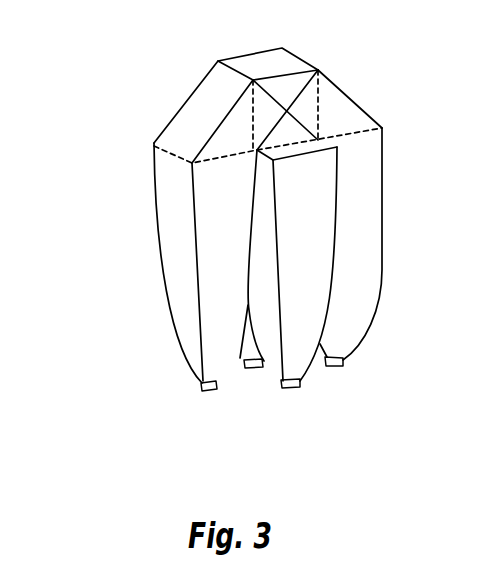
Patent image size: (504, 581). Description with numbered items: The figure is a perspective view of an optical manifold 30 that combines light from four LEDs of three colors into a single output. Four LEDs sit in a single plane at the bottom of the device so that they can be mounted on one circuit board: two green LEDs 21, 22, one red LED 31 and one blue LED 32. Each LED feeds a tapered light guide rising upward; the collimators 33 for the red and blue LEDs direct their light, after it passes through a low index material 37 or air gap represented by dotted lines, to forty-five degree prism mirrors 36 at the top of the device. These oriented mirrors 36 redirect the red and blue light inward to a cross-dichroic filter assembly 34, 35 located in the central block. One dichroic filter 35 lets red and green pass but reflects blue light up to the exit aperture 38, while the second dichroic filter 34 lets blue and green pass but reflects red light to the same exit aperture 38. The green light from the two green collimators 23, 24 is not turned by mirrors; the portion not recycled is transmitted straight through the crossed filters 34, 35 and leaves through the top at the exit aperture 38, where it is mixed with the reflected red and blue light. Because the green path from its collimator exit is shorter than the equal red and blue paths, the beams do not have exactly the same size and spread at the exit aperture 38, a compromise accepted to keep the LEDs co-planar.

The optical manifold 30 is at (97, 378).
The exit aperture 38 is at (265, 62).
The dichroic filter 34 is at (245, 120).
The prism mirror 36 is at (427, 115).
The dichroic filter 35 is at (293, 90).
The low index material 37 is at (230, 160).
The collimator 33 is at (168, 215).
The green collimator 23 is at (300, 305).
The green collimator 24 is at (245, 345).
The blue LED 32 is at (203, 392).
The green LED 22 is at (253, 372).
The green LED 21 is at (287, 392).
The red LED 31 is at (343, 363).